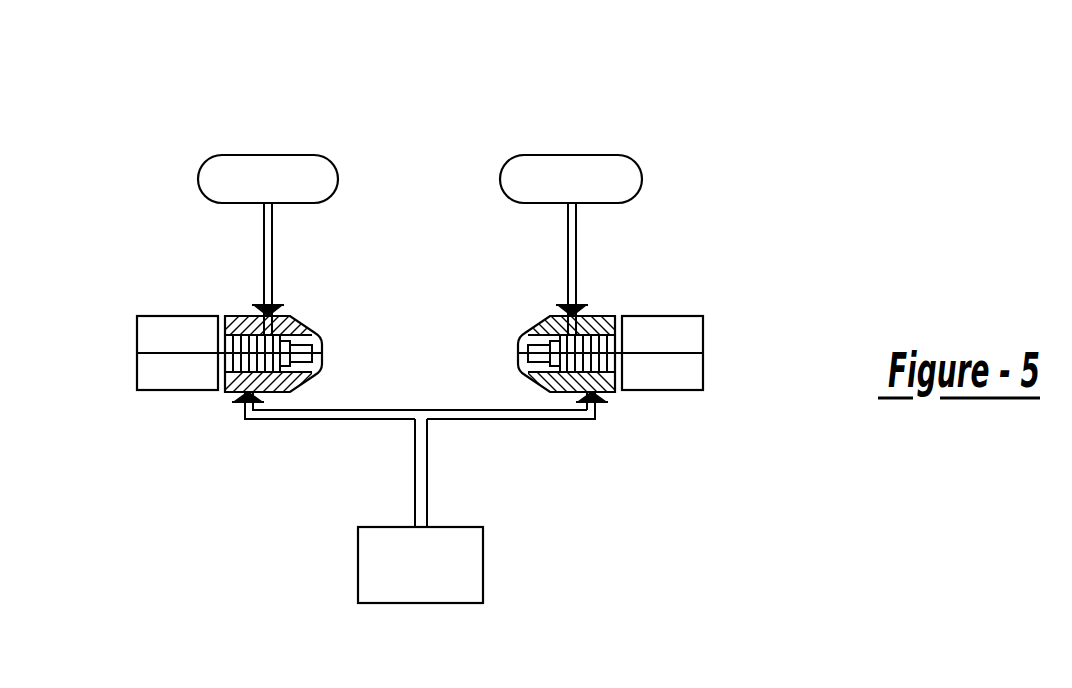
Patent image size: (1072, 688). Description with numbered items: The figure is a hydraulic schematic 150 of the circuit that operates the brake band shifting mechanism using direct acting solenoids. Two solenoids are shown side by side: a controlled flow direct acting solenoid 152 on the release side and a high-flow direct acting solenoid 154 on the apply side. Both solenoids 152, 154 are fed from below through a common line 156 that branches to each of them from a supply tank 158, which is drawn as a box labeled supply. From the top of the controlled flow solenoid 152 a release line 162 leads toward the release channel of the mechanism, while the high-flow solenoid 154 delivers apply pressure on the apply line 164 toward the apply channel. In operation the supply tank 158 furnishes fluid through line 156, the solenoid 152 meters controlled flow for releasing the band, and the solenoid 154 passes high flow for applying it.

The hydraulic schematic 150 is at (517, 106).
The controlled flow direct acting solenoid 152 is at (233, 315).
The high-flow direct acting solenoid 154 is at (612, 317).
The line 156 is at (367, 410).
The supply tank 158 is at (418, 603).
The release line 162 is at (272, 250).
The apply line 164 is at (568, 260).